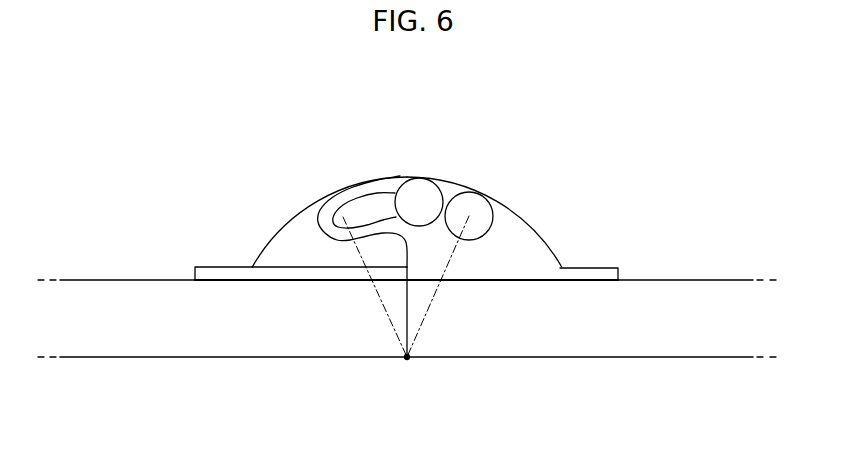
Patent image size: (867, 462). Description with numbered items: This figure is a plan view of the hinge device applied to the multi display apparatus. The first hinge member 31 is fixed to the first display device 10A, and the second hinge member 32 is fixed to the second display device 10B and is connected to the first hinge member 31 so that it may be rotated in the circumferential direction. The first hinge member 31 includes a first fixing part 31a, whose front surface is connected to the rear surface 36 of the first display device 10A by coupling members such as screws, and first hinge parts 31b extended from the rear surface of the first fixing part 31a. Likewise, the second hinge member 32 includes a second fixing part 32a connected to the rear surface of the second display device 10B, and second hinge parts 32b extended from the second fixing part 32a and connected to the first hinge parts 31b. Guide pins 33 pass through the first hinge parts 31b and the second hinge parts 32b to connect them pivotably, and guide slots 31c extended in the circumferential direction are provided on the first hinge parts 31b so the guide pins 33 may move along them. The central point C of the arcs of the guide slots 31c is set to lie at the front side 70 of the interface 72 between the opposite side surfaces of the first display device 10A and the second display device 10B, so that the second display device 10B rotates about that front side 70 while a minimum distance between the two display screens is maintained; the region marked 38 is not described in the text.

The first display device 10A is at (620, 350).
The second display device 10B is at (193, 352).
The first hinge member 31 is at (540, 218).
The first fixing part 31a is at (610, 269).
The first hinge parts 31b is at (513, 235).
The guide slots 31c is at (371, 209).
The second hinge member 32 is at (272, 224).
The second fixing part 32a is at (205, 269).
The second hinge parts 32b is at (297, 238).
The guide pins 33 is at (433, 160).
The rear surface of the first display device 36 is at (712, 280).
The left surface region 38 is at (108, 280).
The front side of the interface 70 is at (406, 388).
The interface 72 is at (408, 312).